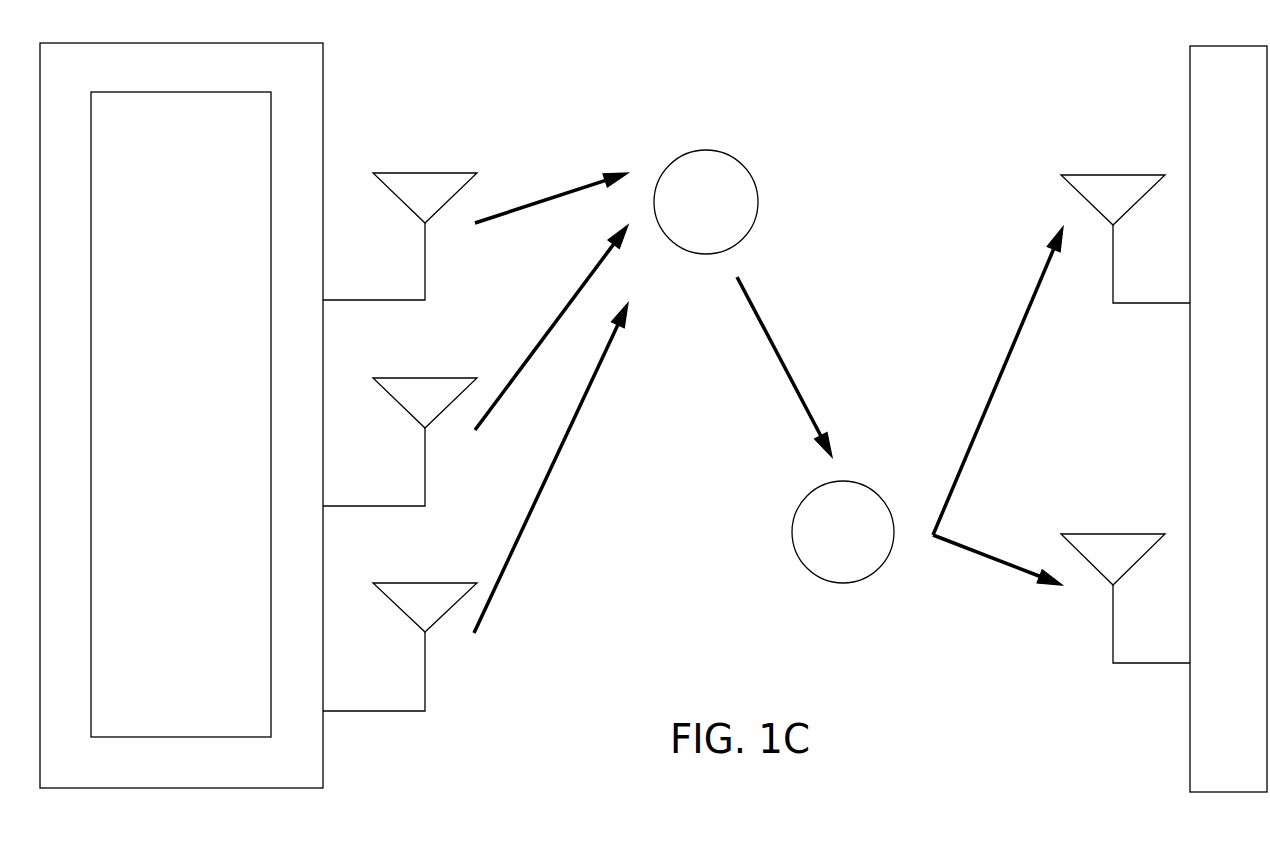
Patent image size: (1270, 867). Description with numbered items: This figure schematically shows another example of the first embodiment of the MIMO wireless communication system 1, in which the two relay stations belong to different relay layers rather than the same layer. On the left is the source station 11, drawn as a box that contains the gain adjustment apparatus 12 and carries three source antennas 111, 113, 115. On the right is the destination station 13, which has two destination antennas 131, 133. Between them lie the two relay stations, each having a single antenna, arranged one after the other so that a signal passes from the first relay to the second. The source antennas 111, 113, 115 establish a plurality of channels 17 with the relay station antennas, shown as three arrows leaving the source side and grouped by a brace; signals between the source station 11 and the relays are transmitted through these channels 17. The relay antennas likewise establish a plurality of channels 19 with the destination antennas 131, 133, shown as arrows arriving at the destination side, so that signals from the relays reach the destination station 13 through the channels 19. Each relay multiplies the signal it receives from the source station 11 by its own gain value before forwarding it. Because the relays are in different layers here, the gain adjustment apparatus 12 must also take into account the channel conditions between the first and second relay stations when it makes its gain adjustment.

The MIMO wireless communication system 1 is at (732, 92).
The source station 11 is at (288, 776).
The gain adjustment apparatus 12 is at (225, 724).
The destination station 13 is at (1234, 777).
The source antenna 111 is at (406, 202).
The source antenna 113 is at (406, 408).
The source antenna 115 is at (406, 614).
The destination antenna 131 is at (1094, 204).
The destination antenna 133 is at (1094, 564).
The channels 17 is at (473, 657).
The channels 19 is at (933, 633).